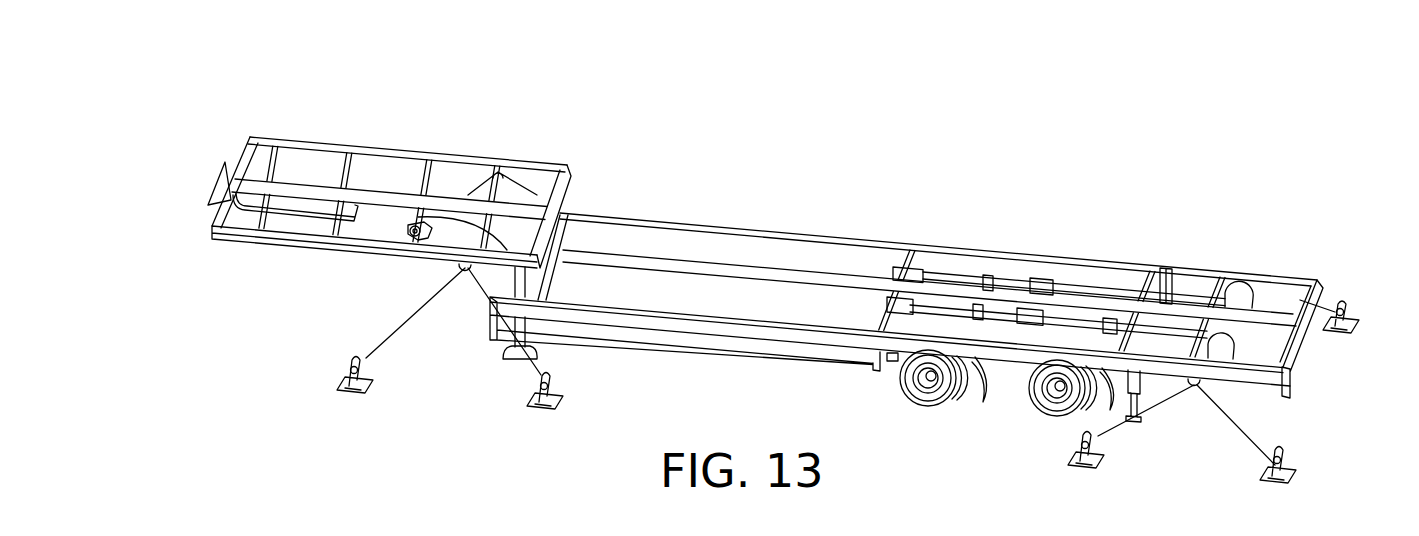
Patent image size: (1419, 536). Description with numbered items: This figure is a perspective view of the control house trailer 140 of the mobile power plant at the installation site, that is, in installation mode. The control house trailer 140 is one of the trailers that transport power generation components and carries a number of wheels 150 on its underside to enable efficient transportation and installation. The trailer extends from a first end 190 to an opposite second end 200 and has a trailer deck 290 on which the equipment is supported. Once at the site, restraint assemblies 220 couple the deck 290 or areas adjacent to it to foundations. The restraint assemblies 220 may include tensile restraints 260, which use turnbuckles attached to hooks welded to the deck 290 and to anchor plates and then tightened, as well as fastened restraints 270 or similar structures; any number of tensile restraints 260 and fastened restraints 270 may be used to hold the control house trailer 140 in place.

The control house trailer 140 is at (348, 97).
The first end 190 is at (243, 157).
The trailer deck 290 is at (1047, 253).
The second end 200 is at (1328, 305).
The restraint assemblies 220 is at (877, 373).
The tensile restraints 260 is at (348, 392).
The fastened restraints 270 is at (540, 353).
The wheels 150 is at (923, 403).